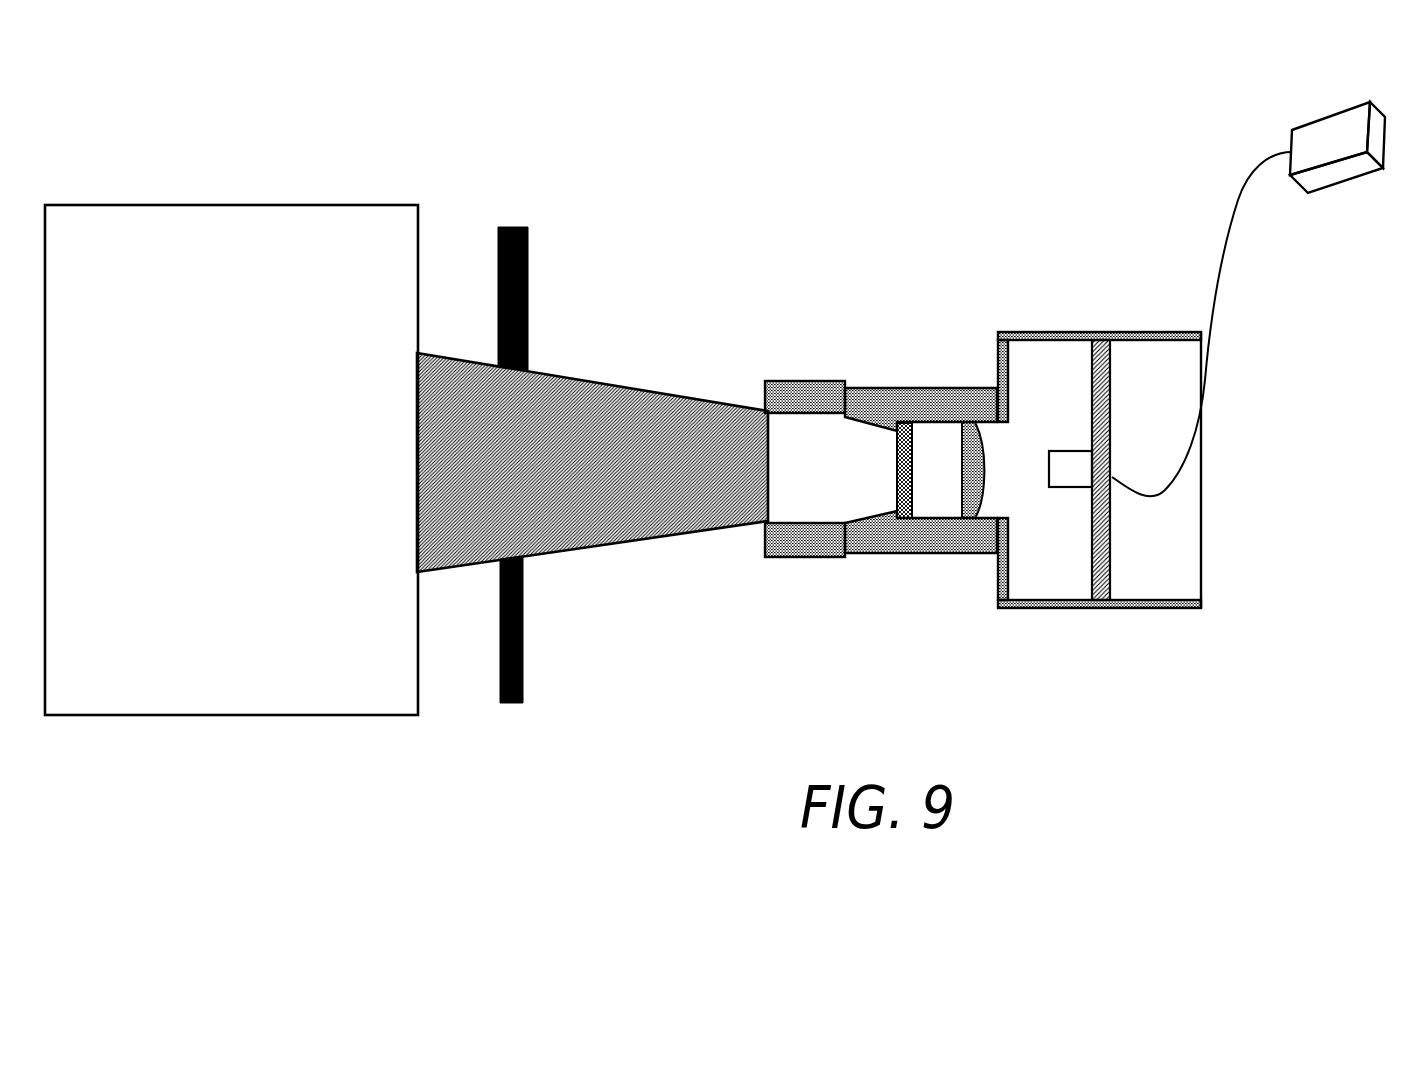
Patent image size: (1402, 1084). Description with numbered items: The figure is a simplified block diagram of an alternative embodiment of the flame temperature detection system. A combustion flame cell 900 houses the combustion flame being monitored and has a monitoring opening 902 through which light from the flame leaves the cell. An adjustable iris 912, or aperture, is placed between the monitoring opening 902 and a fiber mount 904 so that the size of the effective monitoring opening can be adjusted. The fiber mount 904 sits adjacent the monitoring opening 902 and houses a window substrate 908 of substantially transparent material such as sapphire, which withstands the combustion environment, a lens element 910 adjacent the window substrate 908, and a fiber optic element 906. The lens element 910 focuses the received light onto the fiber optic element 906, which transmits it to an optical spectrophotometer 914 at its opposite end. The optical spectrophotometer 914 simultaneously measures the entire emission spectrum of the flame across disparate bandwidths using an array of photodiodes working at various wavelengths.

The combustion flame cell 900 is at (251, 428).
The monitoring opening 902 is at (413, 532).
The fiber mount 904 is at (877, 310).
The fiber optic element 906 is at (1138, 512).
The window substrate 908 is at (905, 503).
The lens element 910 is at (970, 485).
The adjustable iris 912 is at (523, 603).
The optical spectrophotometer 914 is at (1325, 125).